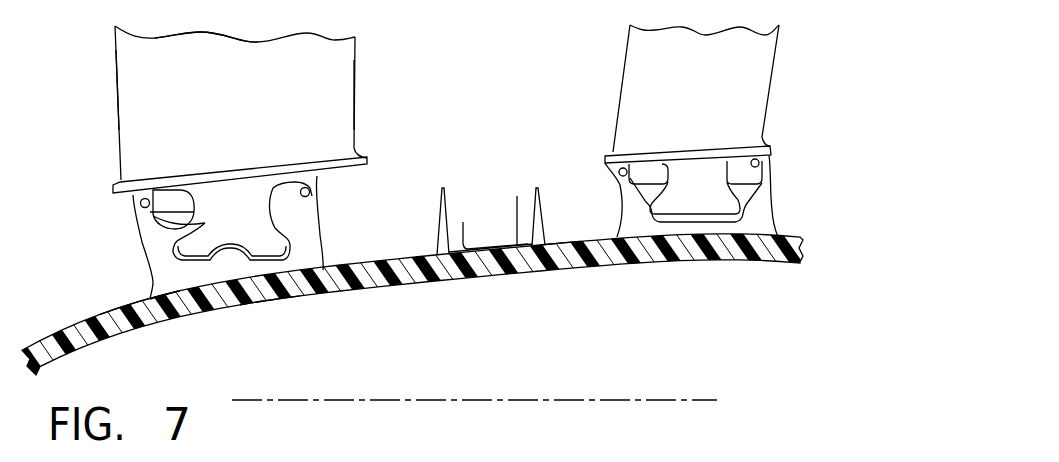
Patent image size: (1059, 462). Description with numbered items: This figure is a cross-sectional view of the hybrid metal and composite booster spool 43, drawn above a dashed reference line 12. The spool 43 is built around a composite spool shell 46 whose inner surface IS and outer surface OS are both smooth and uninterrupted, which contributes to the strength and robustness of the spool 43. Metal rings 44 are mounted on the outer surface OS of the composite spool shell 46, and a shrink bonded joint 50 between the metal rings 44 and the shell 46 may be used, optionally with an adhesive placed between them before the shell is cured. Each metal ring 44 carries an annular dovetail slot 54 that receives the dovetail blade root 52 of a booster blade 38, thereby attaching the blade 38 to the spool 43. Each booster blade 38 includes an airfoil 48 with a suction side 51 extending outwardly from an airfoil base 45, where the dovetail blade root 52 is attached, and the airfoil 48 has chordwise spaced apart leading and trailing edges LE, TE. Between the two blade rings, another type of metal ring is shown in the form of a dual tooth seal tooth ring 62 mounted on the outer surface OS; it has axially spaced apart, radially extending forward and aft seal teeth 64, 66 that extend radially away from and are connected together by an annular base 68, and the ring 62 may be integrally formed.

The engine centerline axis 12 is at (632, 398).
The booster blade 38 is at (115, 43).
The booster spool 43 is at (143, 327).
The metal ring 44 is at (297, 220).
The airfoil base 45 is at (200, 178).
The composite spool shell 46 is at (351, 291).
The airfoil 48 is at (355, 55).
The shrink bonded joint 50 is at (148, 289).
The suction side 51 is at (228, 63).
The dovetail blade root 52 is at (138, 215).
The dovetail slot 54 is at (284, 243).
The dual tooth seal tooth ring 62 is at (476, 212).
The forward seal tooth 64 is at (441, 200).
The aft seal tooth 66 is at (533, 190).
The annular base 68 is at (517, 196).
The leading edge LE is at (115, 82).
The trailing edge TE is at (356, 87).
The inner surface IS is at (273, 301).
The outer surface OS is at (560, 242).